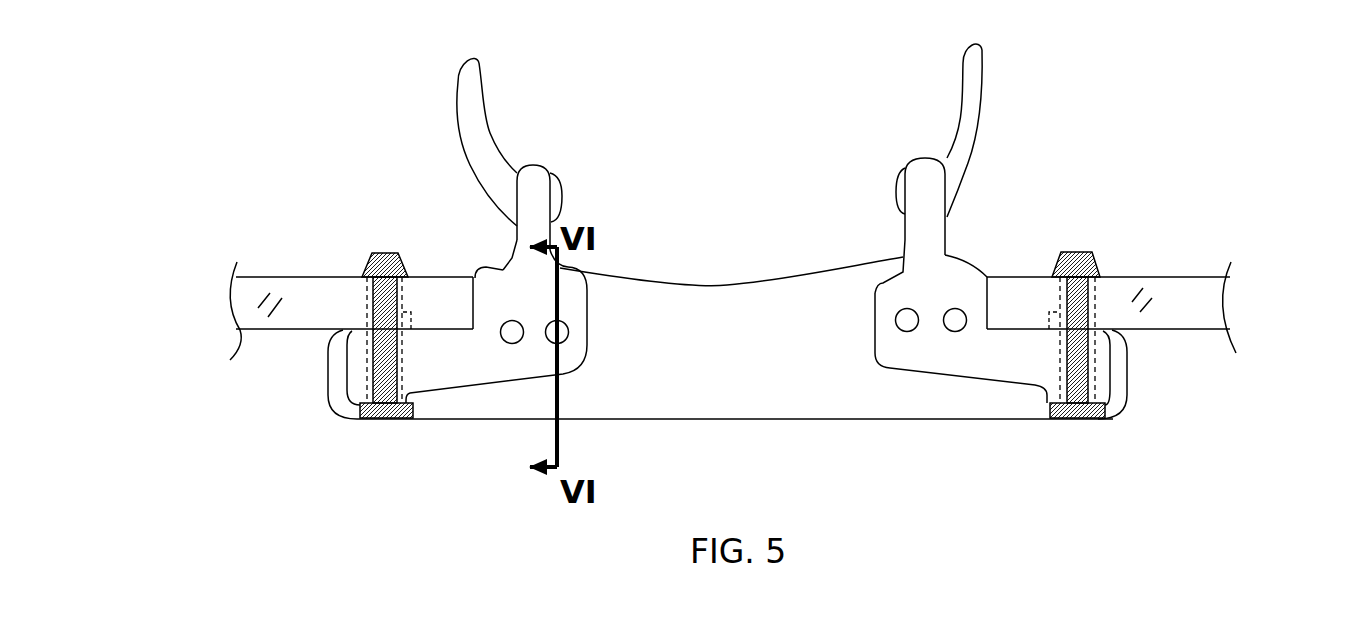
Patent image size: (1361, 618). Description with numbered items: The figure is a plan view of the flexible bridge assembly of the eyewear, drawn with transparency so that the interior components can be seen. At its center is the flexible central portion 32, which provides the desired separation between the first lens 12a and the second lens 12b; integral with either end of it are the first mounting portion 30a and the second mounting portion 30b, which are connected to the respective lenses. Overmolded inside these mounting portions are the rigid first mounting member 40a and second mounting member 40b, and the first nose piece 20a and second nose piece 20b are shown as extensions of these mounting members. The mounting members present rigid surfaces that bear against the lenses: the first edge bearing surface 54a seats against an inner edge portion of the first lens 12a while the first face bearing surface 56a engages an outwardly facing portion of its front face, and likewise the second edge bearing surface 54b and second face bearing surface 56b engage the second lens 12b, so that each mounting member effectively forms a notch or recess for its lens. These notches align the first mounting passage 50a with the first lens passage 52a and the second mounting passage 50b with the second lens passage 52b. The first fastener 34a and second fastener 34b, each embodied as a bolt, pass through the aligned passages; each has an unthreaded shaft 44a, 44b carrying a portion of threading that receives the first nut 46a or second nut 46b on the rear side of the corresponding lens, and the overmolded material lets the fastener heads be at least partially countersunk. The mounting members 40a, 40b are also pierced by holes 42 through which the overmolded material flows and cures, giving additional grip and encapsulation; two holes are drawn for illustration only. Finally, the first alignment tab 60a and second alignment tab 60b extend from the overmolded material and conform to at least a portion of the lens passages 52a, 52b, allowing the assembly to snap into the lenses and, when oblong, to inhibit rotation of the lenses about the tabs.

The first lens 12a is at (242, 290).
The second lens 12b is at (1208, 305).
The first nose piece 20a is at (488, 152).
The second nose piece 20b is at (967, 130).
The first mounting portion 30a is at (458, 407).
The second mounting portion 30b is at (987, 402).
The flexible central portion 32 is at (705, 352).
The first fastener 34a is at (385, 420).
The second fastener 34b is at (1080, 420).
The first mounting member 40a is at (522, 297).
The second mounting member 40b is at (917, 290).
The holes 42 is at (563, 340).
The unthreaded shaft 44a is at (383, 375).
The unthreaded shaft 44b is at (1090, 363).
The first nut 46a is at (387, 252).
The second nut 46b is at (1080, 265).
The first mounting passage 50a is at (368, 360).
The second mounting passage 50b is at (1095, 366).
The first lens passage 52a is at (367, 292).
The second lens passage 52b is at (1100, 295).
The first edge bearing surface 54a is at (485, 309).
The second edge bearing surface 54b is at (982, 303).
The first face bearing surface 56a is at (419, 336).
The second face bearing surface 56b is at (1023, 337).
The first alignment tab 60a is at (364, 321).
The second alignment tab 60b is at (1098, 329).